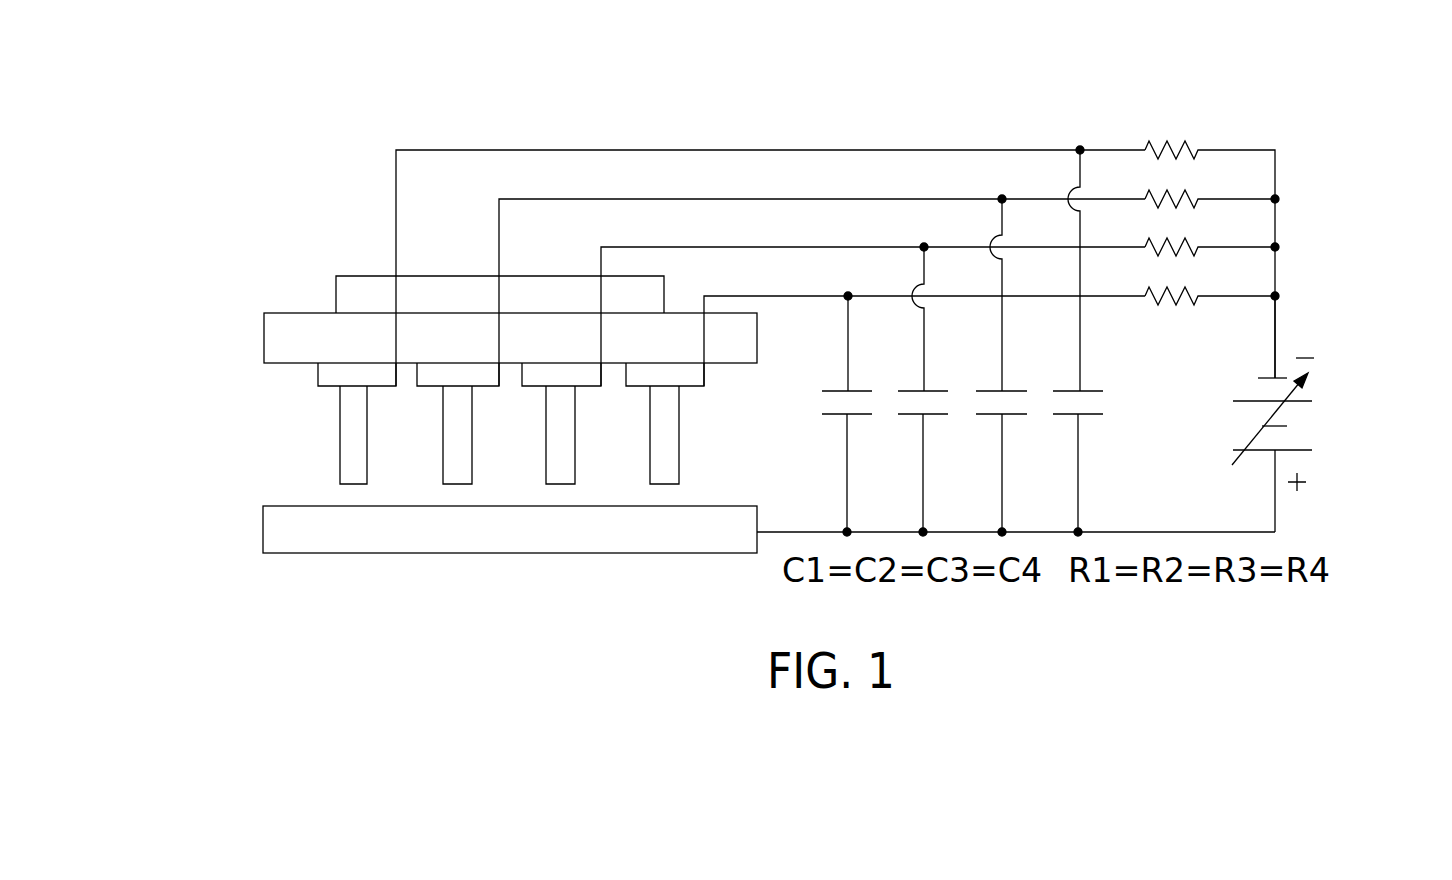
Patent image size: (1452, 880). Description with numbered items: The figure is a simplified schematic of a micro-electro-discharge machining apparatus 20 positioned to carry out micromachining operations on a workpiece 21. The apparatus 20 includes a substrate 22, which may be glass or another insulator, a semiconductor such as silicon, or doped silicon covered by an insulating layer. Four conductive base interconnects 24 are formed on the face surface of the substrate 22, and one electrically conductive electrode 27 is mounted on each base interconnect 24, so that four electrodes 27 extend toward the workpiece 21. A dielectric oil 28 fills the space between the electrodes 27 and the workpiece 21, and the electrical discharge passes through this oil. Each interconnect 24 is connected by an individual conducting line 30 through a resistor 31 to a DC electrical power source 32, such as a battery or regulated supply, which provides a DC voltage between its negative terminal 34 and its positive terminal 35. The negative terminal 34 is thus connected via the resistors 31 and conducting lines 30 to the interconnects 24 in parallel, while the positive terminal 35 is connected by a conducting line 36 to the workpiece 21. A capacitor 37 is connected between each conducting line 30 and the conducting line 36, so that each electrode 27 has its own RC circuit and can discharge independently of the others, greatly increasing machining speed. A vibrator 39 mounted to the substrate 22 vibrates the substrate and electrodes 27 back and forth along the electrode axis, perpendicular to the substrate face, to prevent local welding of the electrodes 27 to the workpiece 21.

The micro-electro-discharge machining apparatus 20 is at (552, 122).
The workpiece 21 is at (345, 553).
The substrate 22 is at (287, 300).
The conductive base interconnects 24 is at (303, 381).
The electrically conductive electrodes 27 is at (323, 455).
The dielectric oil 28 is at (408, 492).
The conducting lines 30 is at (877, 296).
The resistors 31 is at (1148, 290).
The DC electrical power source 32 is at (1307, 415).
The negative terminal 34 is at (1280, 333).
The positive terminal 35 is at (1273, 513).
The conducting line 36 is at (1138, 533).
The capacitors 37 is at (833, 391).
The vibrator 39 is at (374, 276).